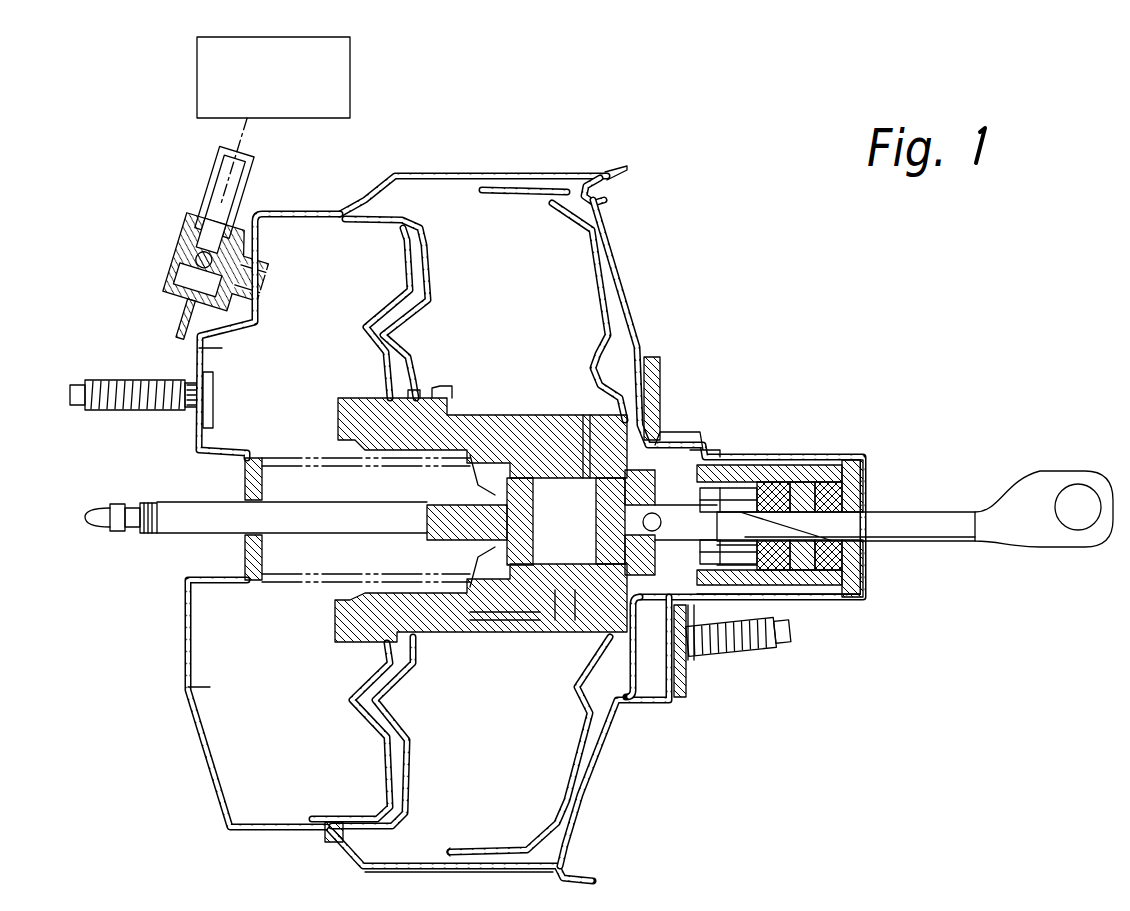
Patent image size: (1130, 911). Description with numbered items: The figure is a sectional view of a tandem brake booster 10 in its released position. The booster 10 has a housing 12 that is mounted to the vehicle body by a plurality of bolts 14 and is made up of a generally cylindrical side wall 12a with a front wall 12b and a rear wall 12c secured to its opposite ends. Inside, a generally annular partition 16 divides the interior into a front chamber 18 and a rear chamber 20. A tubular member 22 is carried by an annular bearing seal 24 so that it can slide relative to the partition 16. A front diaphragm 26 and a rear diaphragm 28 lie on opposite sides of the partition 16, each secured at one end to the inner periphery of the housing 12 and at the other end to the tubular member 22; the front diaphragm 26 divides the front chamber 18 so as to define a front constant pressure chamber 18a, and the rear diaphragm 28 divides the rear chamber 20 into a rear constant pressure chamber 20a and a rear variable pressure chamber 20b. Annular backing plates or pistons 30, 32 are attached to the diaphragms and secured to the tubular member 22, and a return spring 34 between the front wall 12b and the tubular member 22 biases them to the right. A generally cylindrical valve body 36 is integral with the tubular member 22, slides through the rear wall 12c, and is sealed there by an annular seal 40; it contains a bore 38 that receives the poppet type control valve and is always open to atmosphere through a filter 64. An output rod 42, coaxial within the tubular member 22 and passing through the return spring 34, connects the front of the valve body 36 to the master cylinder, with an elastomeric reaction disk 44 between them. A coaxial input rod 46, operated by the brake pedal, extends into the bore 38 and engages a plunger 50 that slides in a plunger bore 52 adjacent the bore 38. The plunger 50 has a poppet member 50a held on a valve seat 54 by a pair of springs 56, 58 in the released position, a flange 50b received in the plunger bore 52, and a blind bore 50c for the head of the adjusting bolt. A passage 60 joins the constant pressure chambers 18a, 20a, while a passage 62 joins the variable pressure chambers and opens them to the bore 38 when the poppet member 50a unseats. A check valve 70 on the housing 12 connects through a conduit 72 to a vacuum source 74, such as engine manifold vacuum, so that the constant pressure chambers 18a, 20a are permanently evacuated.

The tandem brake booster 10 is at (692, 200).
The housing 12 is at (491, 496).
The side wall 12a is at (462, 174).
The front wall 12b is at (198, 440).
The rear wall 12c is at (627, 280).
The bolts 14 is at (128, 392).
The partition 16 is at (420, 317).
The front chamber 18 is at (328, 297).
The front constant pressure chamber 18a is at (307, 375).
The rear chamber 20 is at (519, 283).
The rear constant pressure chamber 20a is at (562, 337).
The rear variable pressure chamber 20b is at (637, 382).
The tubular member 22 is at (338, 418).
The annular bearing seal 24 is at (448, 398).
The front diaphragm 26 is at (330, 812).
The rear diaphragm 28 is at (478, 848).
The backing plate 30 is at (352, 692).
The backing plate 32 is at (568, 782).
The return spring 34 is at (283, 584).
The valve body 36 is at (838, 460).
The bore 38 is at (760, 470).
The annular seal 40 is at (690, 440).
The output rod 42 is at (170, 540).
The reaction disk 44 is at (505, 512).
The input rod 46 is at (998, 541).
The plunger 50 is at (645, 620).
The poppet member 50a is at (705, 655).
The flange 50b is at (688, 680).
The blind bore 50c is at (628, 640).
The plunger bore 52 is at (660, 400).
The valve seat 54 is at (775, 580).
The spring 56 is at (860, 598).
The spring 58 is at (870, 560).
The passage 60 is at (573, 478).
The passage 62 is at (497, 607).
The filter 64 is at (860, 495).
The check valve 70 is at (176, 252).
The conduit 72 is at (217, 202).
The vacuum source 74 is at (352, 100).